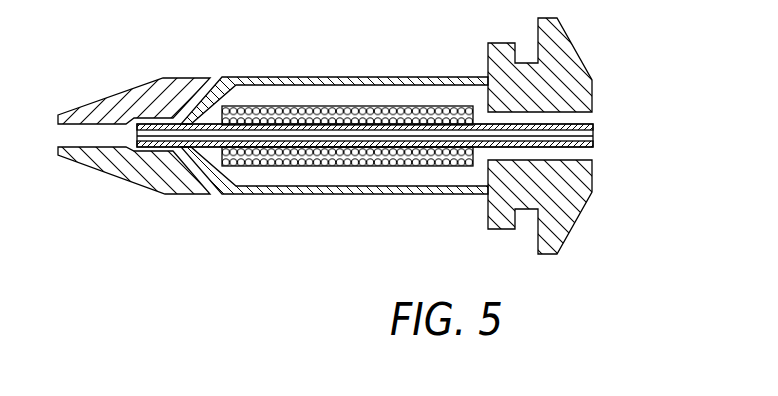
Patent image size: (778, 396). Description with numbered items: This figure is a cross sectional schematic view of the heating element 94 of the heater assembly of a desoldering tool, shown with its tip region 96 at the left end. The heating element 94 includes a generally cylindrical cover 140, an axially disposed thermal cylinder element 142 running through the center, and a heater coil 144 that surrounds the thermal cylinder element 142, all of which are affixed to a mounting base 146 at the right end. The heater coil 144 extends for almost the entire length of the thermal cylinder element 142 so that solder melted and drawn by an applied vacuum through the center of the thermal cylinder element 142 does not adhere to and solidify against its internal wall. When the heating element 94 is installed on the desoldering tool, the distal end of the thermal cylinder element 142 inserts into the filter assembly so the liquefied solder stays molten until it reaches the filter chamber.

The heating element 94 is at (226, 218).
The upper tip jaw 96 is at (123, 105).
The cover 140 is at (343, 195).
The thermal cylinder element 142 is at (594, 128).
The heater coil 144 is at (338, 110).
The mounting base 146 is at (567, 197).